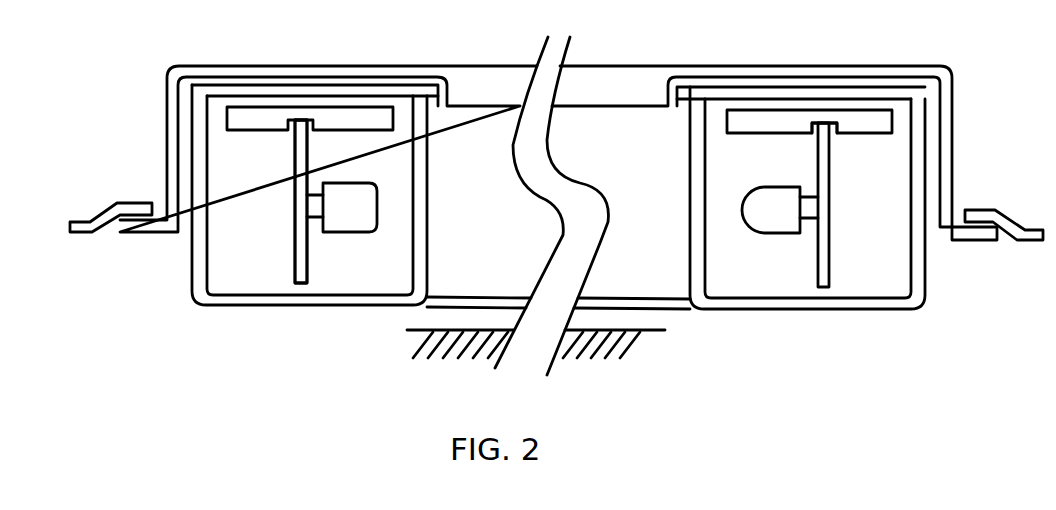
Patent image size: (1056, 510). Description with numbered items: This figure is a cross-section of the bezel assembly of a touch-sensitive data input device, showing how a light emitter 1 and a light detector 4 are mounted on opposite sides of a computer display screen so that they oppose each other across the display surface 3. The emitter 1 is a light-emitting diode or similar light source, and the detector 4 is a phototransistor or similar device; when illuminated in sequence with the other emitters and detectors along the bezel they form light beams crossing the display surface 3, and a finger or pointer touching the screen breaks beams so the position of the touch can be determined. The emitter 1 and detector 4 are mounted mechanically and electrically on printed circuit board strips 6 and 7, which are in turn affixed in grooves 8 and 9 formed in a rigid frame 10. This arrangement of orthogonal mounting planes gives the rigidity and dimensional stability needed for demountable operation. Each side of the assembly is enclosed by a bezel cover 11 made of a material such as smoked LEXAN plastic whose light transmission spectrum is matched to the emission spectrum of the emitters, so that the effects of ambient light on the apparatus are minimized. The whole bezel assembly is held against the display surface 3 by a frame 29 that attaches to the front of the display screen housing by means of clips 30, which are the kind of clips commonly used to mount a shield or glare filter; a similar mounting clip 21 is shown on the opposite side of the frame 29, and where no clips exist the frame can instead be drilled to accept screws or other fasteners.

The light emitter 1 is at (350, 232).
The display surface 3 is at (410, 330).
The light detector 4 is at (790, 233).
The printed circuit board strip 6 is at (297, 283).
The printed circuit board strip 7 is at (822, 288).
The groove 8 is at (293, 223).
The groove 9 is at (832, 133).
The rigid frame 10 is at (280, 130).
The bezel cover 11 is at (925, 285).
The mounting hook 21 is at (1007, 210).
The frame 29 is at (837, 66).
The clip 30 is at (88, 215).